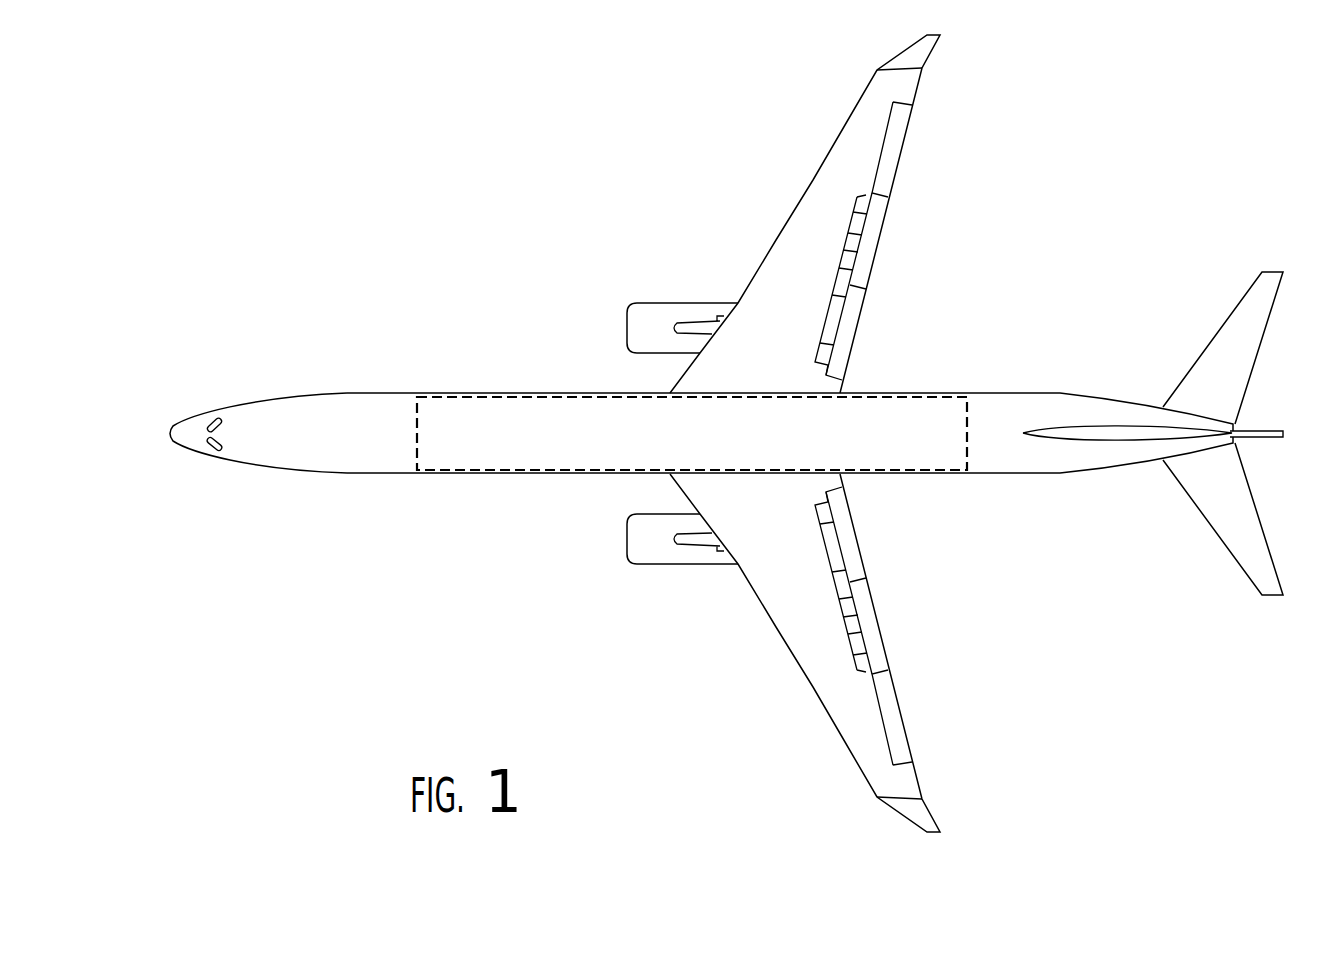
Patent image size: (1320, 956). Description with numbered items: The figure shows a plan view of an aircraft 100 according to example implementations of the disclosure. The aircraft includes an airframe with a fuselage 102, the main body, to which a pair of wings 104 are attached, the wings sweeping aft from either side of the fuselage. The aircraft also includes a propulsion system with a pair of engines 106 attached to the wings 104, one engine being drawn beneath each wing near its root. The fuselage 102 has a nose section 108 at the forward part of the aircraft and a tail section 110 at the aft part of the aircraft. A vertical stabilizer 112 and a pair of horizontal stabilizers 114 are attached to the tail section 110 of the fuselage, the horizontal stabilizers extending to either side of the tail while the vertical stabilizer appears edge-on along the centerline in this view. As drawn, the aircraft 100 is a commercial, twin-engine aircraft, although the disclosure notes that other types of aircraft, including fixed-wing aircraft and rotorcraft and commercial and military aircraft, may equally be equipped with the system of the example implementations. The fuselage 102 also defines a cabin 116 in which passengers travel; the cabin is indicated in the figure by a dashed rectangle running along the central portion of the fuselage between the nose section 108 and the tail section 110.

The aircraft 100 is at (392, 263).
The fuselage 102 is at (398, 393).
The wings 104 is at (782, 232).
The engines 106 is at (668, 302).
The nose section 108 is at (162, 418).
The tail section 110 is at (1115, 518).
The vertical stabilizer 112 is at (1262, 430).
The horizontal stabilizers 114 is at (1217, 333).
The cabin 116 is at (553, 470).